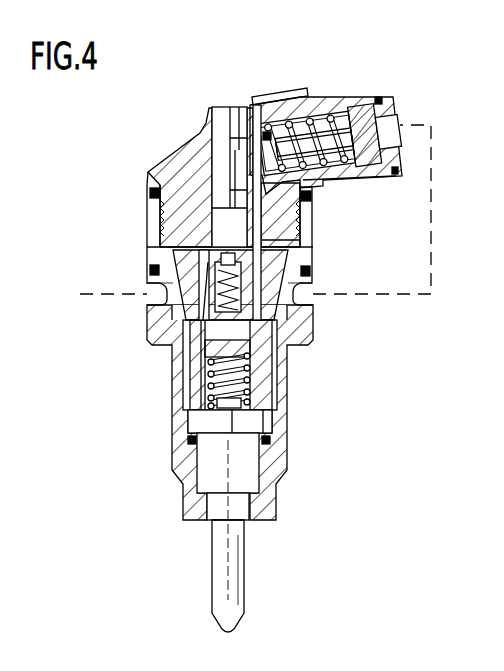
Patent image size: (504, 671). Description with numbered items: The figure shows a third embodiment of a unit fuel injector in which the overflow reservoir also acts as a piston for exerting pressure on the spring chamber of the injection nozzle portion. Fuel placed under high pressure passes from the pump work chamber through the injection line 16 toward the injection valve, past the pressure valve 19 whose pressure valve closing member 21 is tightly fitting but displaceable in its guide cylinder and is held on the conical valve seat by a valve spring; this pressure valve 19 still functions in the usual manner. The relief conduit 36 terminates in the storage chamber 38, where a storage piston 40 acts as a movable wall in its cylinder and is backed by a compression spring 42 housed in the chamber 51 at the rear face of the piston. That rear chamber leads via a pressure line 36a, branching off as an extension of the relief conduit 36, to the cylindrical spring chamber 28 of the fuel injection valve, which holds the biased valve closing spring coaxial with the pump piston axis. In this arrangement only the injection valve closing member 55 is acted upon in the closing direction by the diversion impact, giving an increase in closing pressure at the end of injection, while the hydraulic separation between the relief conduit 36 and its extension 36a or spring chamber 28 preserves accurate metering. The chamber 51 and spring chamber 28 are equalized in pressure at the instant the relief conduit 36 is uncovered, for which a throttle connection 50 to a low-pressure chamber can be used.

The injection line 16 is at (202, 362).
The pressure valve 19 is at (165, 255).
The pressure valve closing member 21 is at (195, 273).
The spring chamber 28 is at (233, 384).
The relief conduit 36 is at (249, 100).
The pressure line 36a is at (300, 241).
The storage chamber 38 is at (305, 213).
The storage piston 40 is at (311, 119).
The compression spring 42 is at (325, 145).
The throttle connection 50 is at (400, 128).
The chamber 51 is at (364, 130).
The injection valve closing member 55 is at (232, 410).